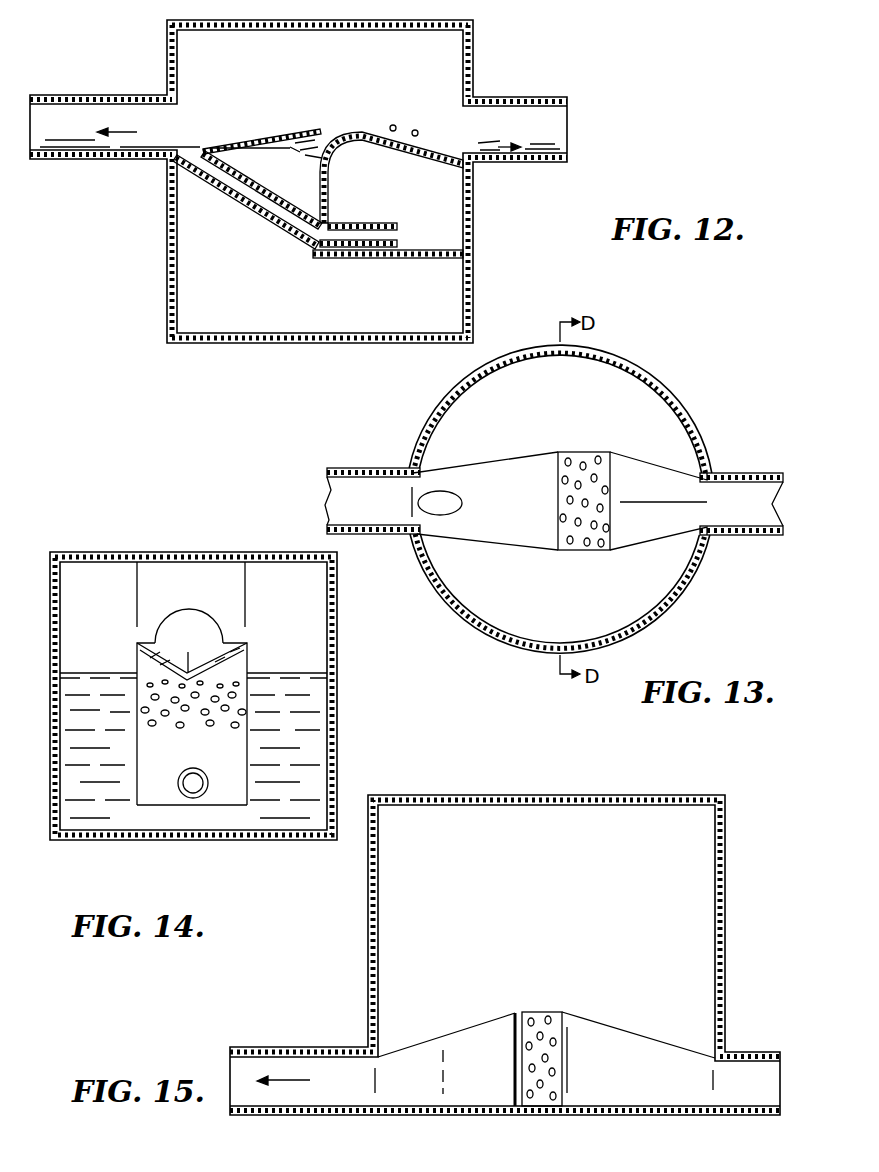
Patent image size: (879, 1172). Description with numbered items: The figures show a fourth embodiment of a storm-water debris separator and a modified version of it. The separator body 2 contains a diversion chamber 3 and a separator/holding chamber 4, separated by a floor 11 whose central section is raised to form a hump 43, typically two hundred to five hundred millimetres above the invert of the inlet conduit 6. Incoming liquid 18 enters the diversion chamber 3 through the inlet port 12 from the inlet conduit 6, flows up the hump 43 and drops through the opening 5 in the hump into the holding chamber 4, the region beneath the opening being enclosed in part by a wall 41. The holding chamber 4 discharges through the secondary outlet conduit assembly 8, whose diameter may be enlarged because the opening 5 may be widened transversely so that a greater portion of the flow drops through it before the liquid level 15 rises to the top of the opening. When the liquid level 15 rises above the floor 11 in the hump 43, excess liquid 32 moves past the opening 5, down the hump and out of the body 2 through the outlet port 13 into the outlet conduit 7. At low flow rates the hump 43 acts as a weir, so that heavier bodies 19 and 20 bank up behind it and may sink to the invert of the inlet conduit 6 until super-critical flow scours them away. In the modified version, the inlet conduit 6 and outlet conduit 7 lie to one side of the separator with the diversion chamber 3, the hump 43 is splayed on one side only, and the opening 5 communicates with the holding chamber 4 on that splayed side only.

In FIG. 12, the separator body 2 is at (165, 276).
In FIG. 13, the separator body 2 is at (632, 360).
In FIG. 14, the separator body 2 is at (343, 701).
In FIG. 15, the separator body 2 is at (642, 783).
In FIG. 15, the diversion chamber 3 is at (474, 1081).
In FIG. 15, the separator/holding chamber 4 is at (563, 908).
In FIG. 12, the opening 5 is at (327, 136).
In FIG. 13, the opening 5 is at (560, 463).
In FIG. 15, the opening 5 is at (518, 1007).
In FIG. 12, the inlet conduit 6 is at (548, 97).
In FIG. 13, the inlet conduit 6 is at (750, 535).
In FIG. 15, the inlet conduit 6 is at (743, 1052).
In FIG. 12, the outlet conduit 7 is at (70, 95).
In FIG. 13, the outlet conduit 7 is at (347, 468).
In FIG. 15, the outlet conduit 7 is at (318, 1047).
In FIG. 12, the secondary outlet conduit assembly 8 is at (233, 173).
In FIG. 13, the secondary outlet conduit assembly 8 is at (440, 510).
In FIG. 14, the secondary outlet conduit assembly 8 is at (197, 800).
In FIG. 12, the floor 11 is at (425, 143).
In FIG. 13, the floor 11 is at (628, 527).
In FIG. 14, the floor 11 is at (240, 643).
In FIG. 12, the inlet port 12 is at (468, 117).
In FIG. 13, the inlet port 12 is at (412, 493).
In FIG. 14, the inlet port 12 is at (177, 620).
In FIG. 15, the inlet port 12 is at (708, 1088).
In FIG. 12, the outlet port 13 is at (177, 117).
In FIG. 13, the outlet port 13 is at (718, 482).
In FIG. 15, the outlet port 13 is at (373, 1086).
In FIG. 14, the liquid level 15 is at (102, 673).
In FIG. 12, the liquid 18 is at (115, 130).
In FIG. 15, the liquid 18 is at (283, 1076).
In FIG. 12, the heavier body 19 is at (392, 125).
In FIG. 12, the heavier body 20 is at (415, 130).
In FIG. 12, the excess liquid 32 is at (256, 136).
In FIG. 12, the wall 41 is at (375, 216).
In FIG. 12, the hump 43 is at (358, 140).
In FIG. 13, the hump 43 is at (573, 552).
In FIG. 15, the hump 43 is at (575, 1040).